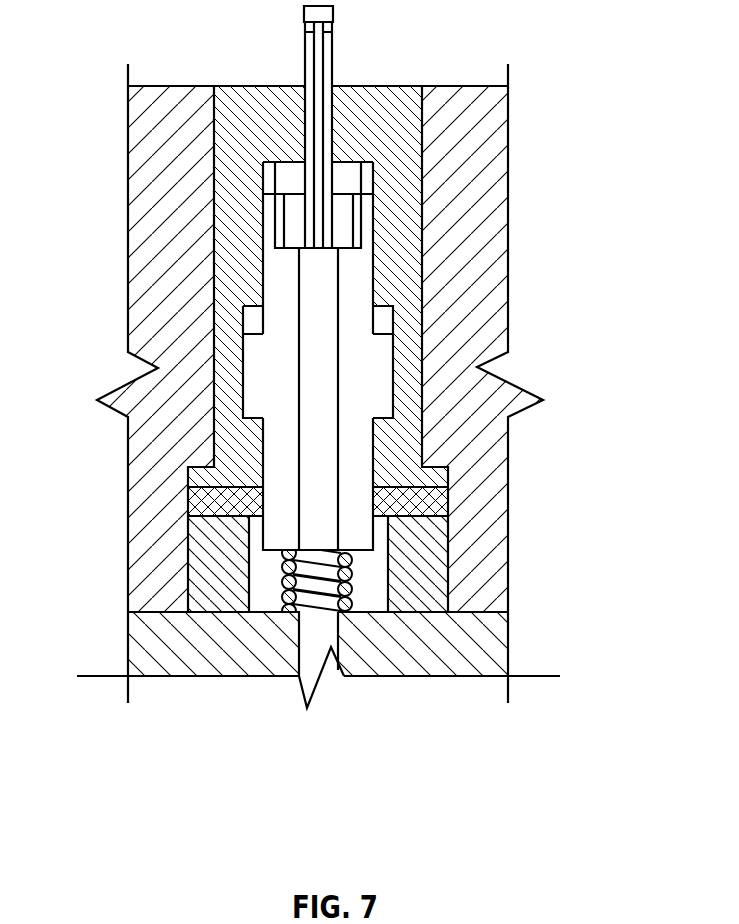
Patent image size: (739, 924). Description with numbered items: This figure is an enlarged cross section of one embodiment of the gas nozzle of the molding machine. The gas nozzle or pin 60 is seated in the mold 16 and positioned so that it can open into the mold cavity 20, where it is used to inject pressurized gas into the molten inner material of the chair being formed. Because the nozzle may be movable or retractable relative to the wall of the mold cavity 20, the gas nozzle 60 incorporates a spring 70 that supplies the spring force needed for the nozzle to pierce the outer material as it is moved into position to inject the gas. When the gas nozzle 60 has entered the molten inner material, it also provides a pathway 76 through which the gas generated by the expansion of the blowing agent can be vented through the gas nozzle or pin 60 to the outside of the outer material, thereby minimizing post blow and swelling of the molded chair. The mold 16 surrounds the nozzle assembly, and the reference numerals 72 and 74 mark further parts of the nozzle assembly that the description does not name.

The mold 16 is at (498, 197).
The mold cavity 20 is at (458, 85).
The gas nozzle or pin 60 is at (207, 208).
The spring 70 is at (350, 575).
The plunger 72 is at (360, 430).
The pin cap 74 is at (333, 43).
The pathway 76 is at (312, 57).